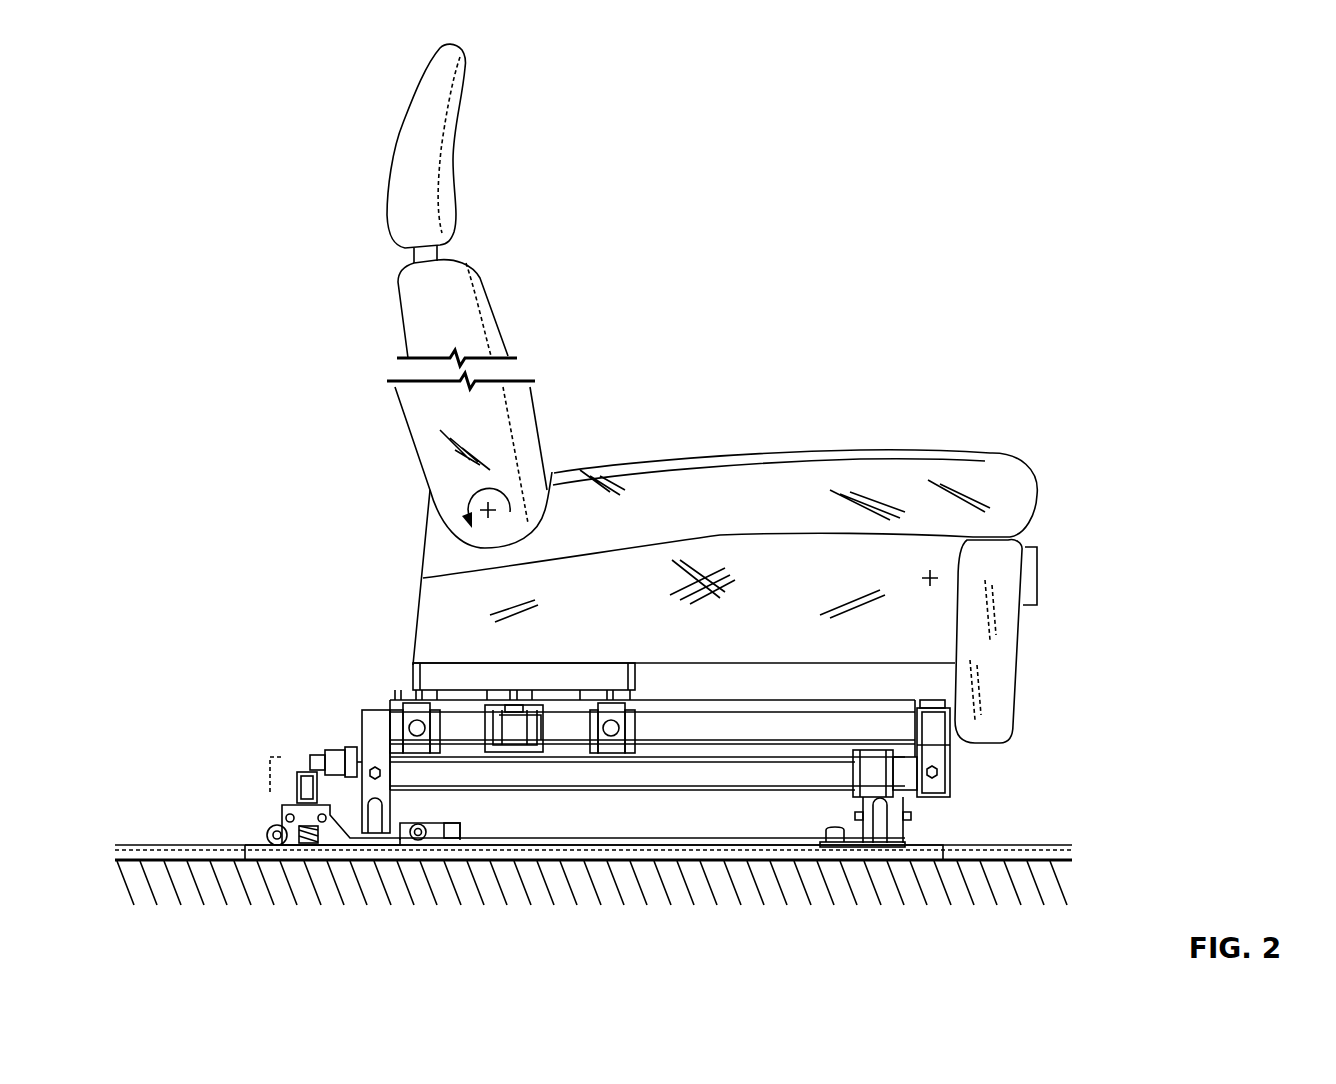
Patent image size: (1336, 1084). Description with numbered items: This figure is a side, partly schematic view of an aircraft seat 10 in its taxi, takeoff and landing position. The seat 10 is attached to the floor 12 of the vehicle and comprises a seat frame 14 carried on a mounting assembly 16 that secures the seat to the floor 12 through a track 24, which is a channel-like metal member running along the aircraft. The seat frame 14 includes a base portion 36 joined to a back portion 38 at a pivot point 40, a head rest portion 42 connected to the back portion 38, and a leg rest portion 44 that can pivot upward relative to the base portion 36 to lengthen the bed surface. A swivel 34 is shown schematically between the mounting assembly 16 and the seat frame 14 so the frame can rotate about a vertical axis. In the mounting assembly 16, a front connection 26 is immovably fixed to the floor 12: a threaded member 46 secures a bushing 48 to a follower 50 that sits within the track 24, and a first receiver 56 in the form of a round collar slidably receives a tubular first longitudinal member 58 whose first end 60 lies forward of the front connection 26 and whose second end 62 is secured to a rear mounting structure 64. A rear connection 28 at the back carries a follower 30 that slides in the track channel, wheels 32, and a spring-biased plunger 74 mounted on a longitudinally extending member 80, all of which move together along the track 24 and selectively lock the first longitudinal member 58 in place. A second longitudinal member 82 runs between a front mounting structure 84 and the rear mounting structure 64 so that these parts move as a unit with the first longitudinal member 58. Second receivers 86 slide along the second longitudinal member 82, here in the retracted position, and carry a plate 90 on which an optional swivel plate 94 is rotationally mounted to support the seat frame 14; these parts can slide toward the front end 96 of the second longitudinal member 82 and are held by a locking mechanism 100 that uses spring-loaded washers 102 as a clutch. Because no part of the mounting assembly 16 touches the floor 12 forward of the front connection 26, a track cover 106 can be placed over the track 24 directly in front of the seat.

The seat 10 is at (843, 158).
The floor 12 is at (897, 902).
The seat frame 14 is at (380, 524).
The mounting assembly 16 is at (978, 762).
The track 24 is at (668, 860).
The front connection 26 is at (940, 846).
The rear connection 28 is at (278, 786).
The follower 30 is at (453, 793).
The wheels 32 is at (268, 838).
The swivel 34 is at (402, 668).
The base portion 36 is at (707, 465).
The back portion 38 is at (438, 312).
The pivot point 40 is at (528, 522).
The head rest portion 42 is at (393, 158).
The leg rest portion 44 is at (1008, 642).
The threaded member 46 is at (835, 828).
The bushing 48 is at (820, 838).
The follower 50 is at (900, 838).
The first receiver 56 is at (862, 770).
The first longitudinal member 58 is at (697, 760).
The first end 60 is at (910, 753).
The second end 62 is at (400, 790).
The rear mounting structure 64 is at (358, 748).
The plunger 74 is at (303, 833).
The member 80 is at (297, 810).
The second longitudinal member 82 is at (873, 714).
The front mounting structure 84 is at (940, 742).
The second receiver 86 is at (418, 738).
The plate 90 is at (400, 702).
The swivel plate 94 is at (638, 672).
The front end 96 is at (890, 714).
The locking mechanism 100 is at (540, 727).
The washers 102 is at (527, 745).
The track cover 106 is at (1060, 845).